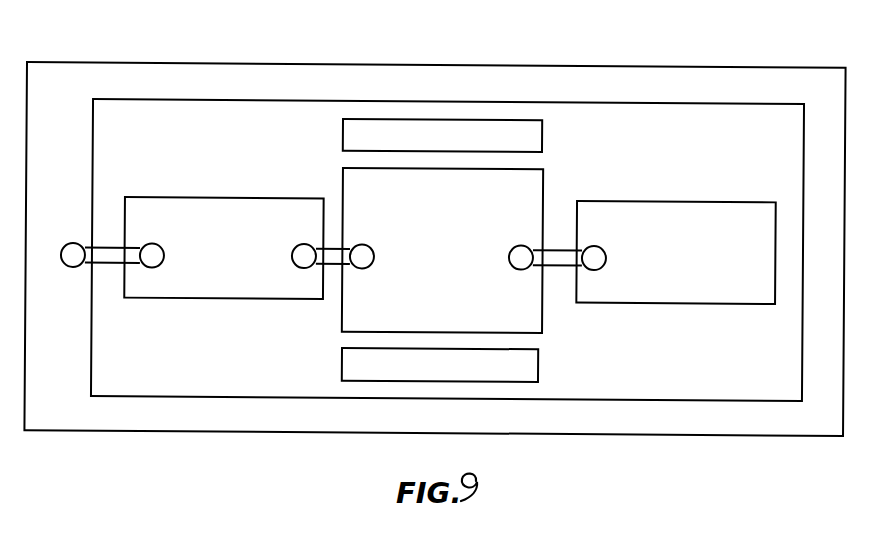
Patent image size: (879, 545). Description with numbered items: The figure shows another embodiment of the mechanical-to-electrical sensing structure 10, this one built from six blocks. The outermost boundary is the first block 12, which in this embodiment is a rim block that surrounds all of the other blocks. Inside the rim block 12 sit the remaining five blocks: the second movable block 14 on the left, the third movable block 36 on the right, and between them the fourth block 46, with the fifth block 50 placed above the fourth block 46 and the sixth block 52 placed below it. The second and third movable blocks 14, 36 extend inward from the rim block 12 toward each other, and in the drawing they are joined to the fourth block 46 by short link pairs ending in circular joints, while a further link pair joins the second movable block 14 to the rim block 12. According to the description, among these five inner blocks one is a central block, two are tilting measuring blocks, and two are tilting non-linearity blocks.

The mechanical-to-electrical sensing structure 10 is at (728, 56).
The first movable block 12 is at (172, 376).
The second movable block 14 is at (240, 262).
The third movable block 36 is at (690, 262).
The fourth block 46 is at (457, 262).
The fifth block 50 is at (427, 146).
The sixth block 52 is at (455, 376).